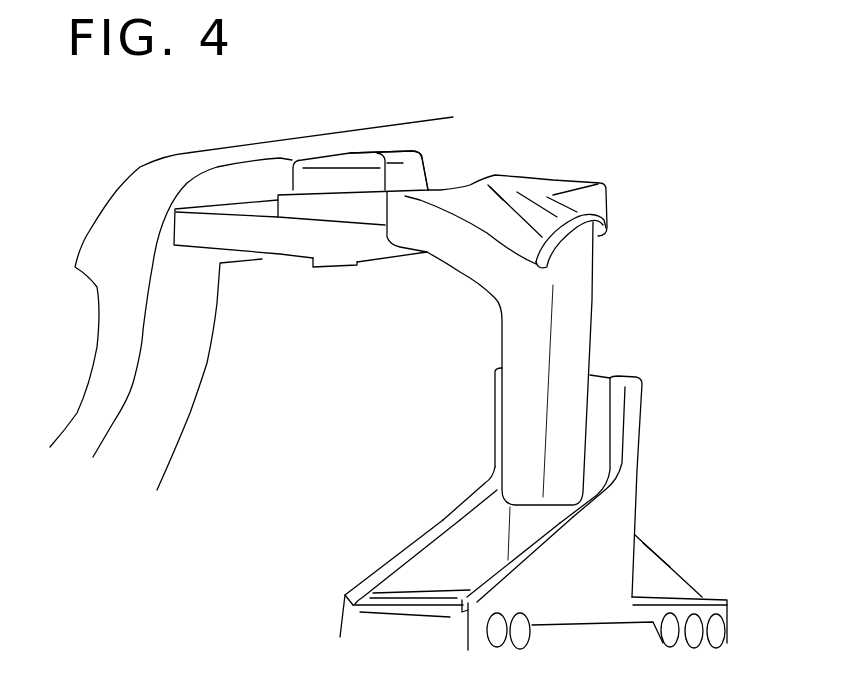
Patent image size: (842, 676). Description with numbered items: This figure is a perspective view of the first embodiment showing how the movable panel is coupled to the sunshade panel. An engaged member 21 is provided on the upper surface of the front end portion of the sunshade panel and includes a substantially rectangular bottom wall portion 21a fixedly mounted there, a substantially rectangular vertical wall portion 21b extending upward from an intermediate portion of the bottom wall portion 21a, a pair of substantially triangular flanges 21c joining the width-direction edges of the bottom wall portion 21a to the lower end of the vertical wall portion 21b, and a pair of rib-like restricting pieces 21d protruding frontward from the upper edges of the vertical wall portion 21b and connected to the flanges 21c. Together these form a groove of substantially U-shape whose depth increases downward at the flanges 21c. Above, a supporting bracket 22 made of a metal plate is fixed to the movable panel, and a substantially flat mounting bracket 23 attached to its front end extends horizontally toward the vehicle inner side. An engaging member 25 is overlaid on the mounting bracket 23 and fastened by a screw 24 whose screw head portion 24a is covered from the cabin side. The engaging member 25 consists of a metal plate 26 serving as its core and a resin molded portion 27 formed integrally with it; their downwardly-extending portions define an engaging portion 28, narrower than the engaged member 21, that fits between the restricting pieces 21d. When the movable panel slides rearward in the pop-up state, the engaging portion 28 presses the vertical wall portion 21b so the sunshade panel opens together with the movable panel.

The engaged member 21 is at (645, 413).
The bottom wall portion 21a is at (728, 620).
The vertical wall portion 21b is at (617, 362).
The flange 21c is at (537, 567).
The restricting piece 21d is at (610, 433).
The supporting bracket 22 is at (97, 361).
The mounting bracket 23 is at (247, 242).
The screw 24 is at (391, 137).
The screw head portion 24a is at (385, 152).
The engaging member 25 is at (502, 212).
The plate 26 is at (332, 213).
The molded portion 27 is at (557, 185).
The engaging portion 28 is at (567, 480).